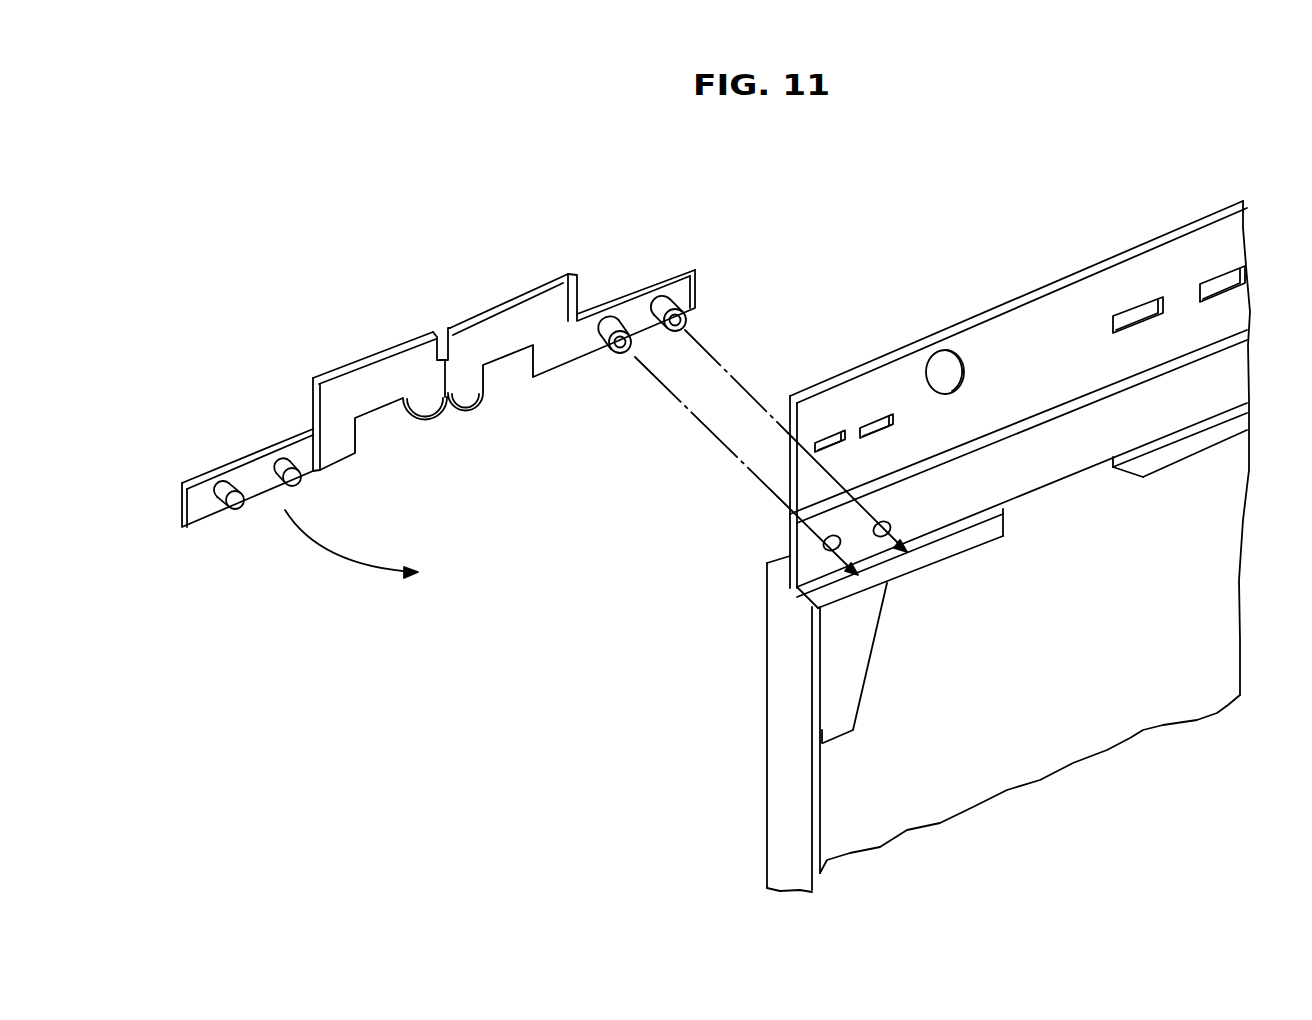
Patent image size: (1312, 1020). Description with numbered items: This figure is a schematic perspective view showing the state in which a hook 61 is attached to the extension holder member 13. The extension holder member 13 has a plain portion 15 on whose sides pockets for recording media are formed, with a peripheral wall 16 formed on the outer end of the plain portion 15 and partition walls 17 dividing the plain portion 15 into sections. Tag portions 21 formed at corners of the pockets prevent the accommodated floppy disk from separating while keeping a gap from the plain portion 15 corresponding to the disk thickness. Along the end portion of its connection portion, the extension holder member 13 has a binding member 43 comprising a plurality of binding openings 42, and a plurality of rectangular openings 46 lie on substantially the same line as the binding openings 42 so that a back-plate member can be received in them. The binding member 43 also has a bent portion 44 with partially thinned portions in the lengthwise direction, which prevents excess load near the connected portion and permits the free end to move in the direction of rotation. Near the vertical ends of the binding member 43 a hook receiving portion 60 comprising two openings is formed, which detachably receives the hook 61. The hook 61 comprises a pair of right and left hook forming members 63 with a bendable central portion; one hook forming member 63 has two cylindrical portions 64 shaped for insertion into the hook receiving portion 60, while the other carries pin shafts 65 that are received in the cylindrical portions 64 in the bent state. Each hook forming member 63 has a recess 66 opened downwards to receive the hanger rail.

The extension holder member 13 is at (990, 477).
The plain portion 15 is at (965, 724).
The peripheral wall 16 is at (770, 808).
The partition wall 17 is at (1245, 420).
The tag portion 21 is at (858, 687).
The binding opening 42 is at (940, 363).
The binding member 43 is at (1020, 446).
The bent portion 44 is at (985, 502).
The rectangular opening 46 is at (837, 430).
The hook receiving portion 60 is at (893, 522).
The hook 61 is at (544, 387).
The hook forming member 63 is at (340, 388).
The cylindrical portion 64 is at (688, 306).
The pin shaft 65 is at (285, 466).
The recess 66 is at (380, 420).